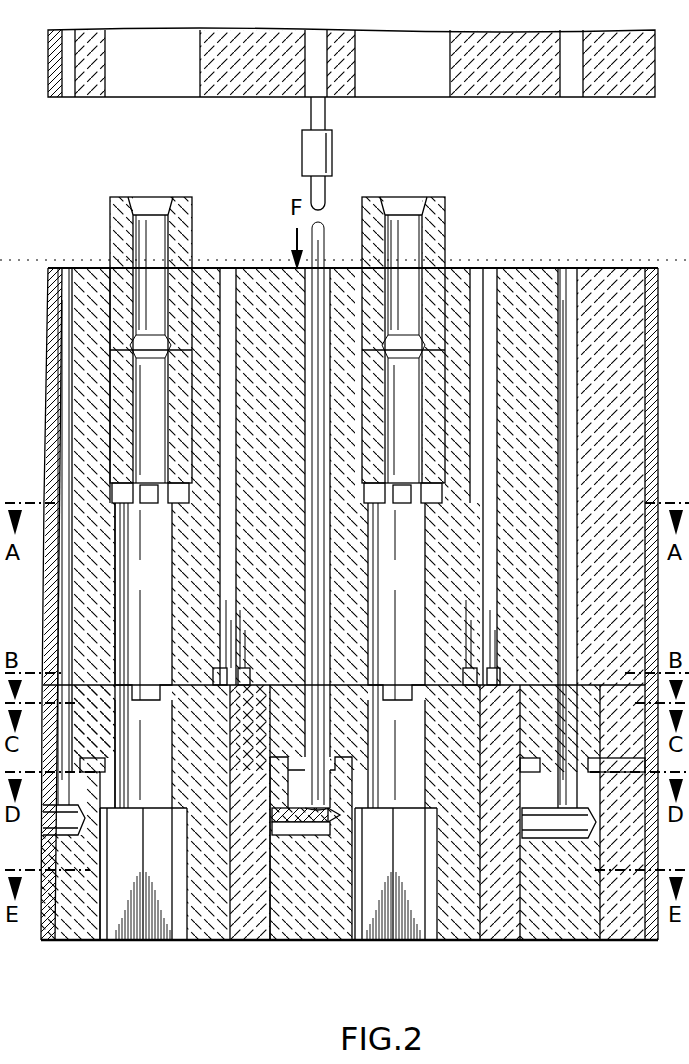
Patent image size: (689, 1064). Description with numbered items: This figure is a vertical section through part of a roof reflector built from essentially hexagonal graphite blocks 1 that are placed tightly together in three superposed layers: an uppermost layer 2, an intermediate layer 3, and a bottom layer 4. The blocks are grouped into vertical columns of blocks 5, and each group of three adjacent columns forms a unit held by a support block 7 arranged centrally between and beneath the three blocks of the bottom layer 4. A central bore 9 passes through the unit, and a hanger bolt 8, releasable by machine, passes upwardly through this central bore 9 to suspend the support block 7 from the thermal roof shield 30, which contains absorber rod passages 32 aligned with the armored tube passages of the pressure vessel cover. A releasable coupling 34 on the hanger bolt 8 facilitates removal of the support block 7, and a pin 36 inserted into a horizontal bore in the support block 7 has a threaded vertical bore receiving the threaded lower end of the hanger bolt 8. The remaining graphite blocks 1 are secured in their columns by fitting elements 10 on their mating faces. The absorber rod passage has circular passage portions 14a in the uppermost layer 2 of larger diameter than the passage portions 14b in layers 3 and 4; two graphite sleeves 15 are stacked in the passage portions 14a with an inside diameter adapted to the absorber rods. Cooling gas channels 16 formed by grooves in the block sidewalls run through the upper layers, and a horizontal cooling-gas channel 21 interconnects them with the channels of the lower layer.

The graphite blocks 1 is at (82, 322).
The uppermost layer 2 is at (82, 444).
The intermediate layer 3 is at (90, 600).
The bottom layer 4 is at (70, 784).
The columns of blocks 5 is at (612, 295).
The support block 7 is at (322, 910).
The hanger bolt 8 is at (326, 192).
The central bore 9 is at (570, 295).
The fitting elements 10 is at (85, 766).
The circular passage portions in the upper layer 14a is at (345, 270).
The circular passage portions in the lower layers 14b is at (143, 721).
The graphite sleeves 15 is at (410, 280).
The cooling gas channels 16 is at (490, 345).
The horizontal cooling-gas channel 21 is at (470, 710).
The thermal roof shield 30 is at (628, 92).
The absorber rod passages 32 is at (160, 38).
The releasable coupling 34 is at (334, 140).
The pin 36 is at (285, 828).